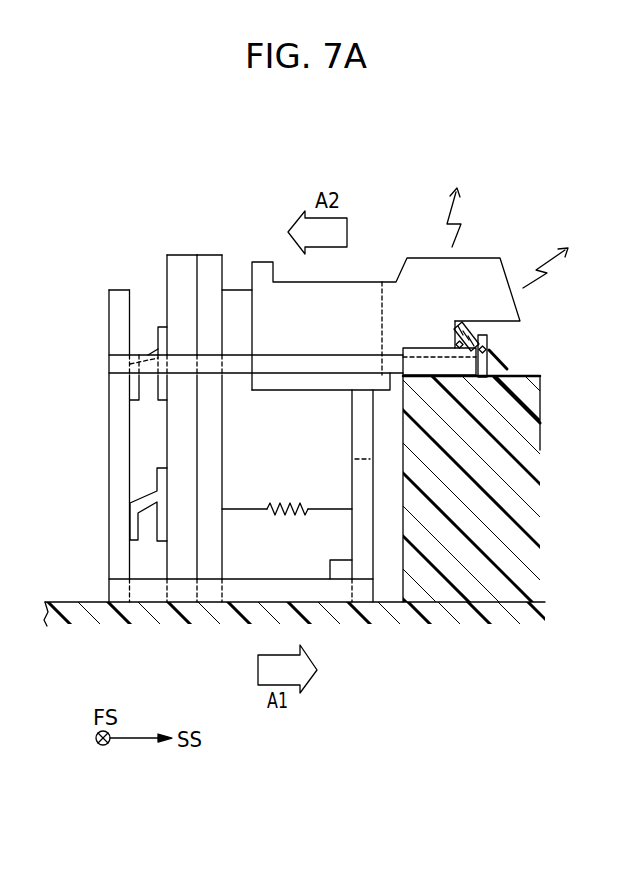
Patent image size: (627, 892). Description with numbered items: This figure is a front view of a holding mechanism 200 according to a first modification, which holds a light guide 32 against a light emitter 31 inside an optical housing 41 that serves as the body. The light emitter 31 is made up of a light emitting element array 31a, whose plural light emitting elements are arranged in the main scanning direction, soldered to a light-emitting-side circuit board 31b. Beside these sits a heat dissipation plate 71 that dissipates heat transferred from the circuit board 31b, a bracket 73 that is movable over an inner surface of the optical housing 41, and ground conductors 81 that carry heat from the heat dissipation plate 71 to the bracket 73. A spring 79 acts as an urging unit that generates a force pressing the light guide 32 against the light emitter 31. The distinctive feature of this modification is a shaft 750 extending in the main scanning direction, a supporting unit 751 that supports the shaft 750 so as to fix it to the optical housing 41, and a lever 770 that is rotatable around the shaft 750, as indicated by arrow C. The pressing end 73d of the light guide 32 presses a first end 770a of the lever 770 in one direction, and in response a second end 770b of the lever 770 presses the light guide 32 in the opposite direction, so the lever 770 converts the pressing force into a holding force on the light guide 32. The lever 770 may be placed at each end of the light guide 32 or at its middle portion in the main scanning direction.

The holding mechanism 200 is at (497, 157).
The light guide 32 is at (488, 238).
The light emitter 31 is at (210, 366).
The light emitting element array 31a is at (242, 288).
The light-emitting-side circuit board 31b is at (205, 270).
The heat dissipation plate 71 is at (170, 272).
The bracket 73 is at (92, 302).
The pressing end 73d is at (541, 413).
The ground conductor 81 is at (128, 390).
The spring 79 is at (273, 513).
The optical housing 41 is at (505, 495).
The lever 770 is at (503, 344).
The first end 770a is at (509, 367).
The second end 770b is at (480, 328).
The shaft 750 is at (484, 337).
The supporting unit 751 is at (490, 381).
The arrow C is at (455, 326).